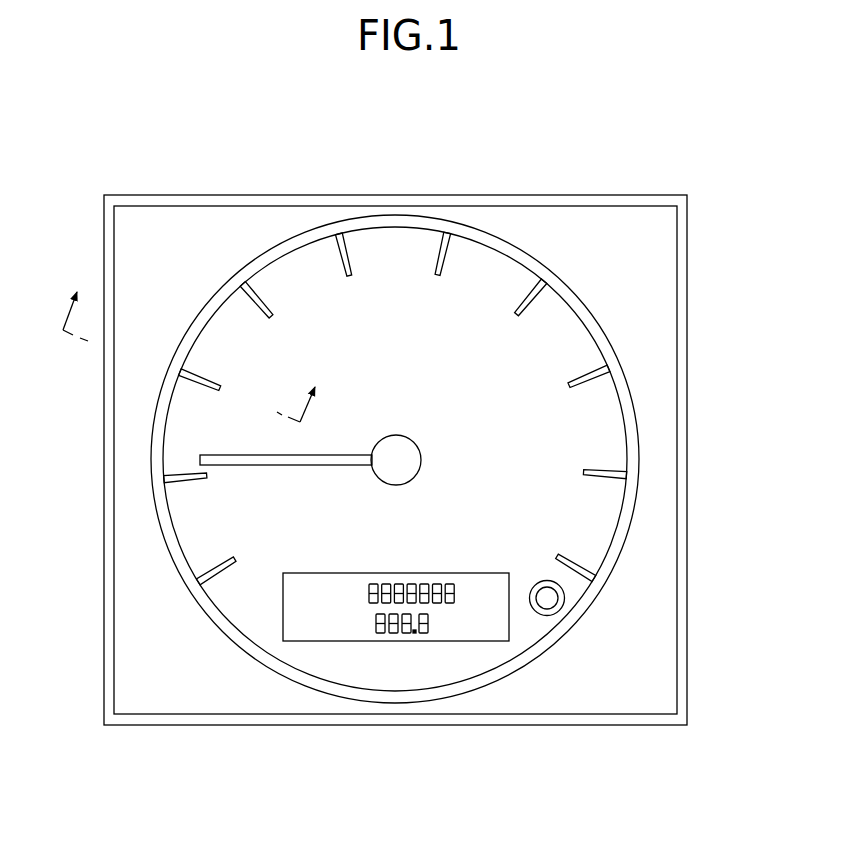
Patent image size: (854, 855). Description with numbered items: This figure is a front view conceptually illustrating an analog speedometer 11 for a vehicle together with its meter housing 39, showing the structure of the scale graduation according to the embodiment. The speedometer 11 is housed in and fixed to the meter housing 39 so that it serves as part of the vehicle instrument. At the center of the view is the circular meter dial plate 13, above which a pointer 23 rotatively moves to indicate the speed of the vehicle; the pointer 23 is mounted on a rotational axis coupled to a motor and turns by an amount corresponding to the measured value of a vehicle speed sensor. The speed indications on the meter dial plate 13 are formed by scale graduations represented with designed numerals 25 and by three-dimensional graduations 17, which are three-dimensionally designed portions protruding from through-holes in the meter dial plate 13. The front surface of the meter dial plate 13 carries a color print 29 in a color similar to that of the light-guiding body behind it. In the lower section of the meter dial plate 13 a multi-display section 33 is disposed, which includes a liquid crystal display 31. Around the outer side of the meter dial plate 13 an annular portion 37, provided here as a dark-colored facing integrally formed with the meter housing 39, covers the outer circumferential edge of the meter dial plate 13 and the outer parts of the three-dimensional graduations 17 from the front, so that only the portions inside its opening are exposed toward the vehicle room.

The analog speedometer 11 is at (171, 166).
The meter dial plate 13 is at (377, 253).
The three-dimensional graduation 17 is at (195, 393).
The pointer 23 is at (352, 452).
The designed numerals 25 is at (267, 340).
The color print 29 is at (338, 363).
The liquid crystal display 31 is at (353, 622).
The multi-display section 33 is at (455, 647).
The annular portion 37 is at (128, 682).
The meter housing 39 is at (687, 680).